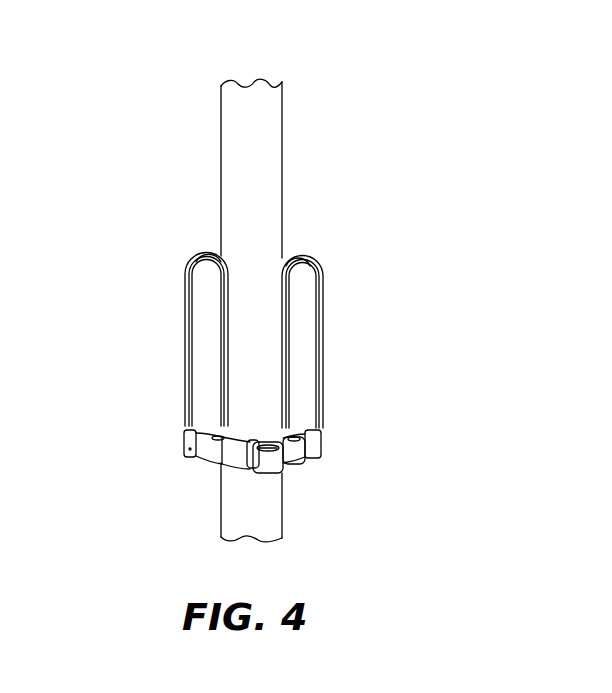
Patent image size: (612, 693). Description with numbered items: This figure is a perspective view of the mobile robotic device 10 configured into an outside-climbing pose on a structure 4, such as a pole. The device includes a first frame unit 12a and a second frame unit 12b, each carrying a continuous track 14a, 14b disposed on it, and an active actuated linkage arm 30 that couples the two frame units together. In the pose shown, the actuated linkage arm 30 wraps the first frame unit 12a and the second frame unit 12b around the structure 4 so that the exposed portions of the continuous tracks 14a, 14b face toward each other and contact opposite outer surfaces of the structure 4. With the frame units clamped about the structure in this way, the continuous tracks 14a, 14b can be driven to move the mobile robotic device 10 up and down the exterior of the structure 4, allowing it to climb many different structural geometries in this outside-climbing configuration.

The structure 4 is at (233, 91).
The mobile robotic device 10 is at (113, 270).
The first frame unit 12a is at (210, 376).
The second frame unit 12b is at (310, 347).
The continuous track 14a is at (222, 260).
The continuous track 14b is at (284, 259).
The actuated linkage arm 30 is at (322, 472).